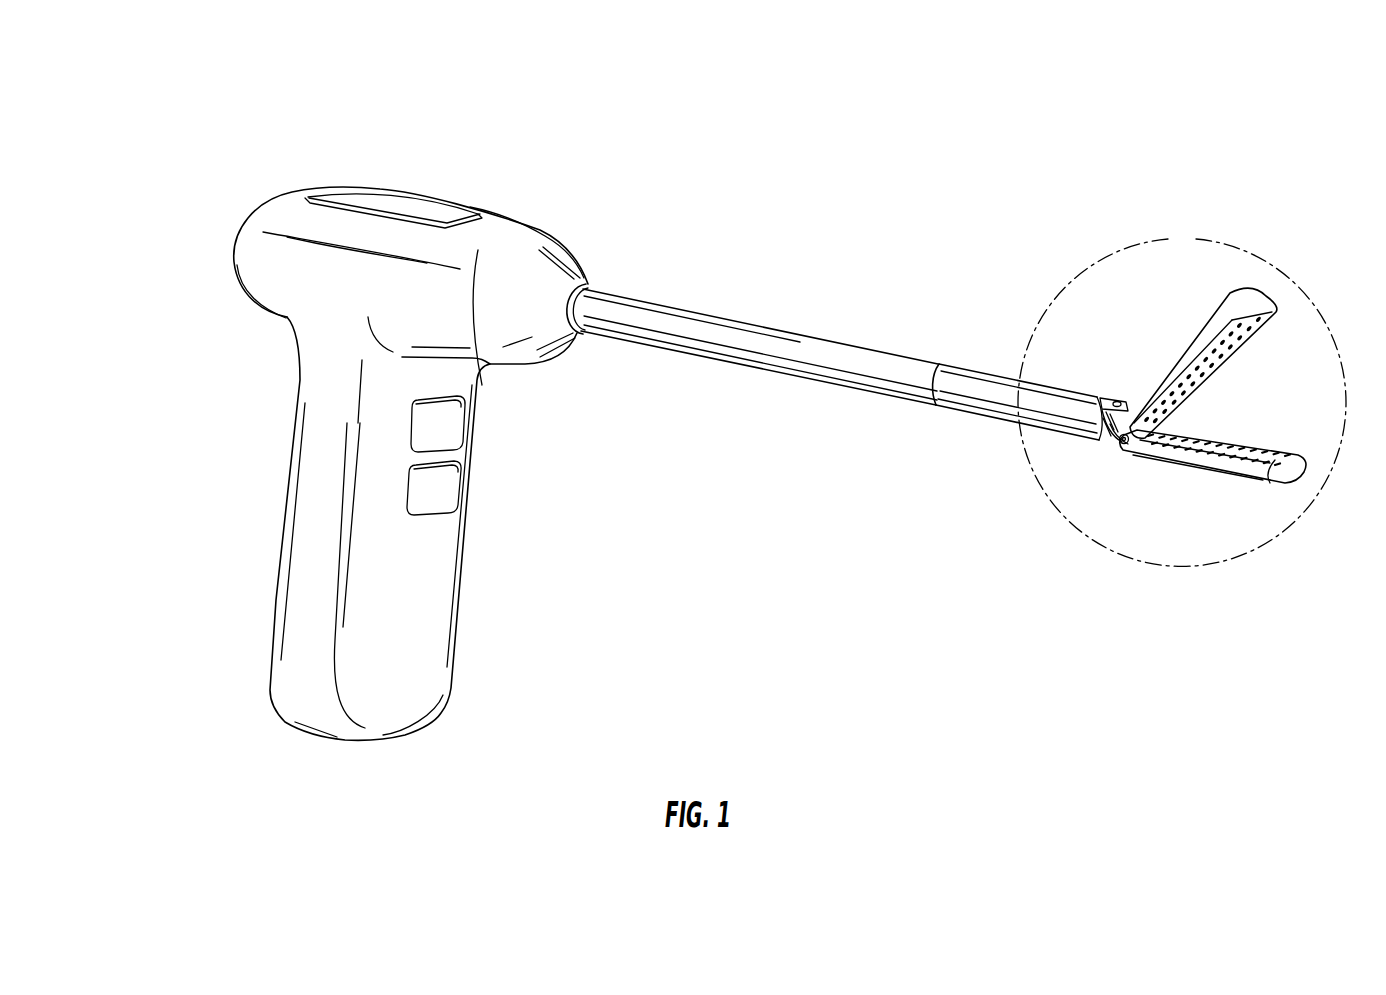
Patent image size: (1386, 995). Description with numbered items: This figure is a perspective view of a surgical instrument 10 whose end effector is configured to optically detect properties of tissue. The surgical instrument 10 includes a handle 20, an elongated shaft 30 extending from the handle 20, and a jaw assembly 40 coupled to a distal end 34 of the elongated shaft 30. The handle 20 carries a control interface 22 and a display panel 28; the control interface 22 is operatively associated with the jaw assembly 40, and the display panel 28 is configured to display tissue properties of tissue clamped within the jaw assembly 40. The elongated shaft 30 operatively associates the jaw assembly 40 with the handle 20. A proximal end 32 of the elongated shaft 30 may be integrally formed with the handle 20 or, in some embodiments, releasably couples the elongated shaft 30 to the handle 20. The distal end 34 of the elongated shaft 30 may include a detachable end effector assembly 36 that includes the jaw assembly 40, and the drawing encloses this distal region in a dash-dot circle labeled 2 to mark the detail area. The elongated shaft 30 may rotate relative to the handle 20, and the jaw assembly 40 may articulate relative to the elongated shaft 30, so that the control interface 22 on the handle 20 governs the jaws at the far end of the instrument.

The surgical instrument 10 is at (819, 139).
The handle 20 is at (258, 469).
The control interface 22 is at (445, 488).
The display panel 28 is at (400, 207).
The elongated shaft 30 is at (752, 319).
The proximal end 32 is at (597, 283).
The distal end 34 is at (938, 366).
The end effector assembly 36 is at (1075, 426).
The jaw assembly 40 is at (1133, 330).
The detail region (FIG. 2) 2 is at (1182, 396).